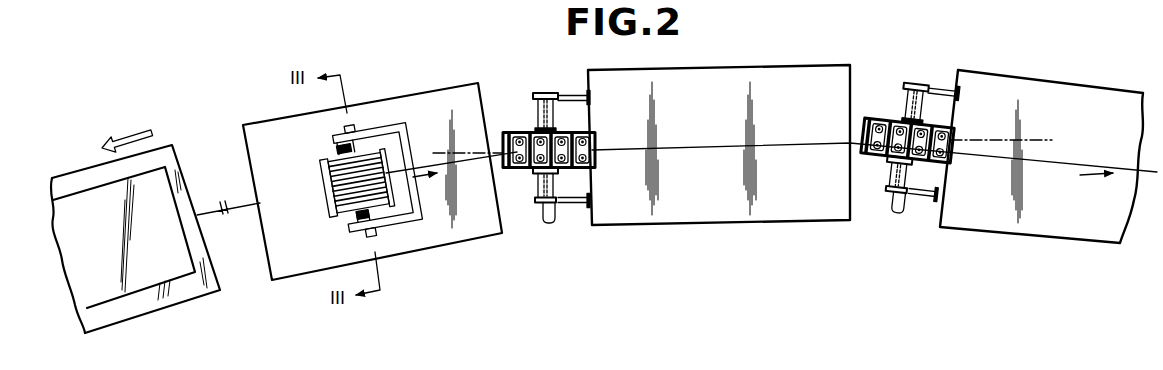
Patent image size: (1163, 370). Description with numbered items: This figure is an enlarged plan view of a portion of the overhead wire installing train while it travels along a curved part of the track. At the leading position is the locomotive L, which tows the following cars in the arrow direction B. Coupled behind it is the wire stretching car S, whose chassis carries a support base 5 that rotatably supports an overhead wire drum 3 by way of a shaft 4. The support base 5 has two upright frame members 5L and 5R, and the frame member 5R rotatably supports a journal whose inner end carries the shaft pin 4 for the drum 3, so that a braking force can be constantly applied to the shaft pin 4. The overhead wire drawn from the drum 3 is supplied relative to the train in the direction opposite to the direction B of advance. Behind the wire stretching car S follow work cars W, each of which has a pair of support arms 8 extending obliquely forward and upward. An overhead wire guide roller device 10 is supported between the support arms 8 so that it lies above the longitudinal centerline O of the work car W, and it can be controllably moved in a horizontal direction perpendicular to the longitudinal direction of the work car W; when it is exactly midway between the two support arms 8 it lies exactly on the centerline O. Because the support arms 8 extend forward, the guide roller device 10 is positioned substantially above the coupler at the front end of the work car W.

The overhead wire drum 3 is at (330, 193).
The shaft 4 is at (338, 152).
The support base 5 is at (428, 204).
The upright frame member 5L is at (352, 229).
The upright frame member 5R is at (370, 136).
The support arms 8 is at (572, 95).
The overhead wire guide roller device 10 is at (515, 129).
The locomotive L is at (178, 299).
The wire stretching car S is at (409, 250).
The work car W is at (715, 216).
The longitudinal centerline O is at (743, 146).
The direction of advance B is at (127, 130).